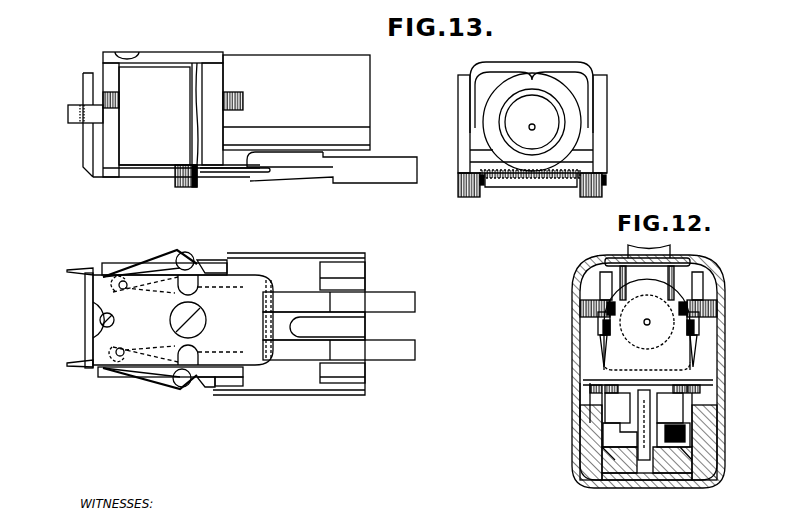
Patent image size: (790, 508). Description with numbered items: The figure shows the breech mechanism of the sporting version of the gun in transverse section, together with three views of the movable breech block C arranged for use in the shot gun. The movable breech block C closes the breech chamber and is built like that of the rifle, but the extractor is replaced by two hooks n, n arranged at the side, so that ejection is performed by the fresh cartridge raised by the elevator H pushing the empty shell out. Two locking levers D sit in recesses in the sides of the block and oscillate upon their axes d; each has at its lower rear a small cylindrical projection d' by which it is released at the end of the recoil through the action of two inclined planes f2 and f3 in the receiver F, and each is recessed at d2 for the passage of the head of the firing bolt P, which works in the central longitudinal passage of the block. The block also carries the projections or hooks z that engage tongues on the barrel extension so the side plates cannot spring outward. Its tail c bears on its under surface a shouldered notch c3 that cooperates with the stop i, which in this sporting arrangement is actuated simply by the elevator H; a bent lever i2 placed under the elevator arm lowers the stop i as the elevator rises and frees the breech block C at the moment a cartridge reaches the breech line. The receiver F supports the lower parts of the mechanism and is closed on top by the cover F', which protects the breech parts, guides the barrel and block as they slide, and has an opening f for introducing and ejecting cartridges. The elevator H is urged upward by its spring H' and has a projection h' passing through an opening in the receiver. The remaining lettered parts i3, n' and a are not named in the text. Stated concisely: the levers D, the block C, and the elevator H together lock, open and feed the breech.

In FIG. 13, the locking levers D is at (357, 226).
In FIG. 13, the movable breech block C is at (337, 225).
In FIG. 12, the movable breech block C is at (647, 324).
In FIG. 13, the axes of the locking levers d is at (176, 199).
In FIG. 12, the axes of the locking levers d is at (617, 408).
In FIG. 13, the cylindrical projection d' is at (389, 286).
In FIG. 12, the cylindrical projection d' is at (670, 408).
In FIG. 13, the recess in locking lever d2 is at (201, 114).
In FIG. 13, the hooks n is at (90, 180).
In FIG. 12, the hooks n is at (690, 333).
In FIG. 13, the rod / pin n' is at (75, 320).
In FIG. 12, the rod / pin n' is at (605, 333).
In FIG. 13, the tail of the movable breech block c is at (403, 246).
In FIG. 13, the shouldered notch c3 is at (339, 269).
In FIG. 13, the projections or hooks z is at (214, 324).
In FIG. 12, the receiver F is at (638, 371).
In FIG. 12, the cover F' is at (734, 347).
In FIG. 12, the opening in the cover f is at (627, 258).
In FIG. 12, the inclined plane f2 is at (577, 404).
In FIG. 12, the inclined plane f3 is at (716, 400).
In FIG. 12, the firing bolt P is at (647, 322).
In FIG. 12, the stop i is at (646, 413).
In FIG. 12, the bent lever i2 is at (643, 425).
In FIG. 12, the stepped block i3 is at (620, 435).
In FIG. 12, the projection on the elevator h' is at (701, 434).
In FIG. 12, the base block a is at (647, 459).
In FIG. 12, the cartridge elevator H is at (711, 492).
In FIG. 12, the elevator spring H' is at (664, 495).